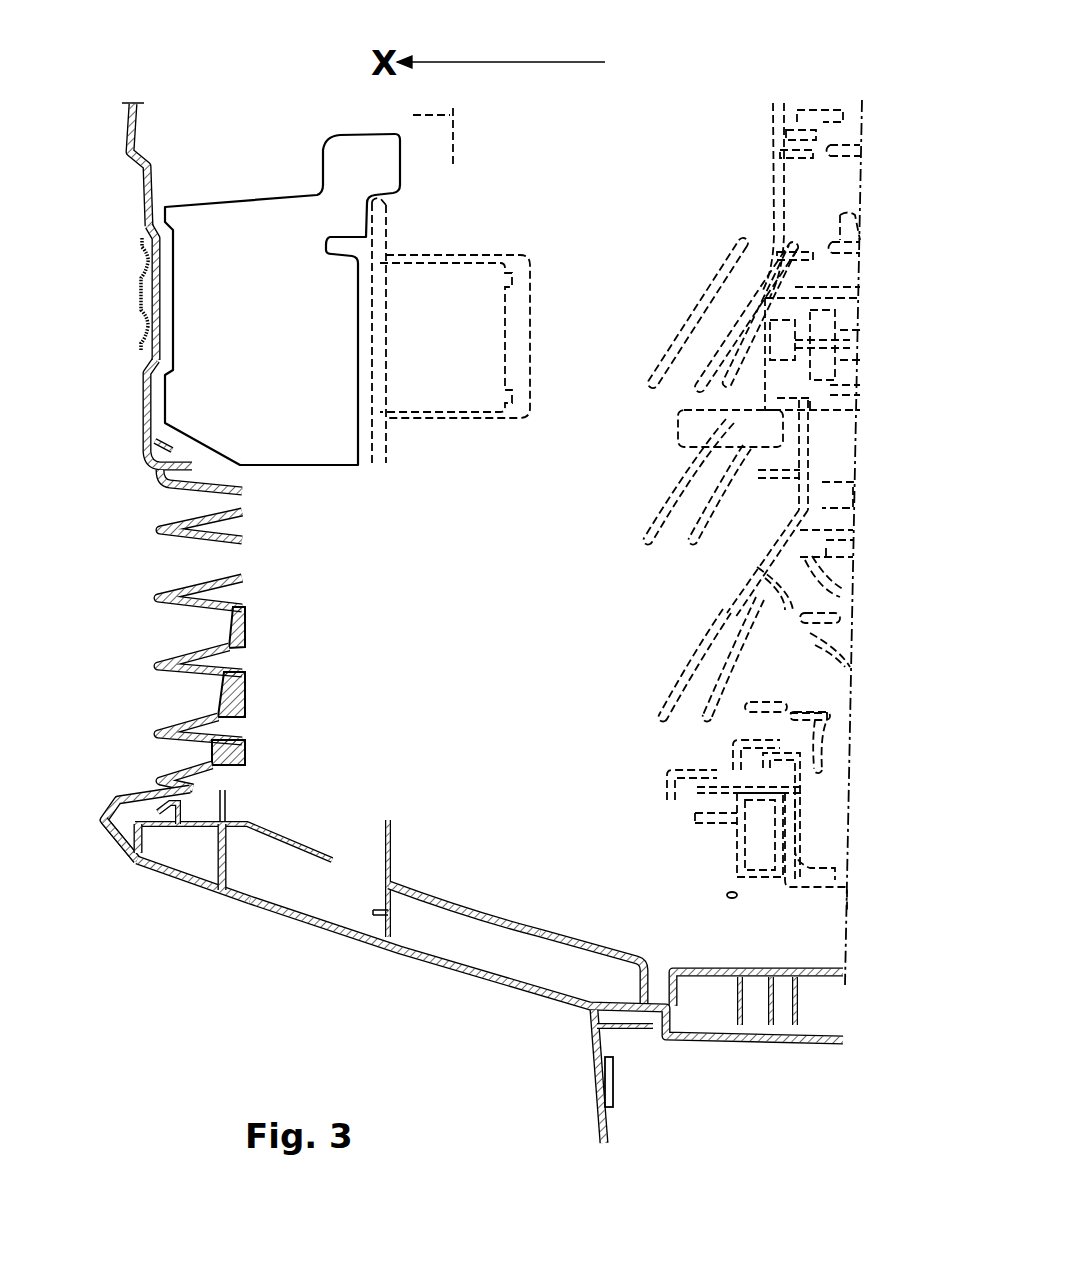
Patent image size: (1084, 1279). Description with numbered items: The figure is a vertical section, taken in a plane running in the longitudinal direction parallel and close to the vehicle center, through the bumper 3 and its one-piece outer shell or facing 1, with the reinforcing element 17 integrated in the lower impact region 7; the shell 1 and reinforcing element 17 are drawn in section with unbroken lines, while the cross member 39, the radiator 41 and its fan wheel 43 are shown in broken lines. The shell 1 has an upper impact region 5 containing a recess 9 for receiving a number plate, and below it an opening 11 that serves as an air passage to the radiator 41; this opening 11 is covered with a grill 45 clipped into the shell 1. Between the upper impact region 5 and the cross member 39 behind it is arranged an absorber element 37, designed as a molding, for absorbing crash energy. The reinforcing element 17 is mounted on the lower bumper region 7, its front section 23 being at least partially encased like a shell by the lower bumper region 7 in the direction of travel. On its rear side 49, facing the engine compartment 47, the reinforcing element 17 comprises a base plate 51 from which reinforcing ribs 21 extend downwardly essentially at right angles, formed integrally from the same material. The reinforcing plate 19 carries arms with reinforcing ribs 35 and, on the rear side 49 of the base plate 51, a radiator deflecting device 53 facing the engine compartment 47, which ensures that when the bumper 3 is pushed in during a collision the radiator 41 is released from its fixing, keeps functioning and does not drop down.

The outer shell or facing 1 is at (122, 118).
The bumper 3 is at (110, 937).
The upper impact region 5 is at (128, 297).
The lower impact region 7 is at (105, 806).
The recess 9 is at (130, 228).
The opening 11 is at (143, 600).
The reinforcing element 17 is at (604, 978).
The reinforcing plate 19 is at (362, 905).
The reinforcing ribs 21 is at (232, 856).
The front section 23 is at (167, 882).
The reinforcing ribs 35 is at (835, 968).
The absorber element 37 is at (280, 218).
The cross member 39 is at (455, 253).
The radiator 41 is at (860, 326).
The fan wheel 43 is at (722, 273).
The grill 45 is at (243, 600).
The engine compartment 47 is at (662, 842).
The rear side 49 is at (458, 895).
The base plate 51 is at (540, 932).
The radiator deflecting device 53 is at (385, 847).